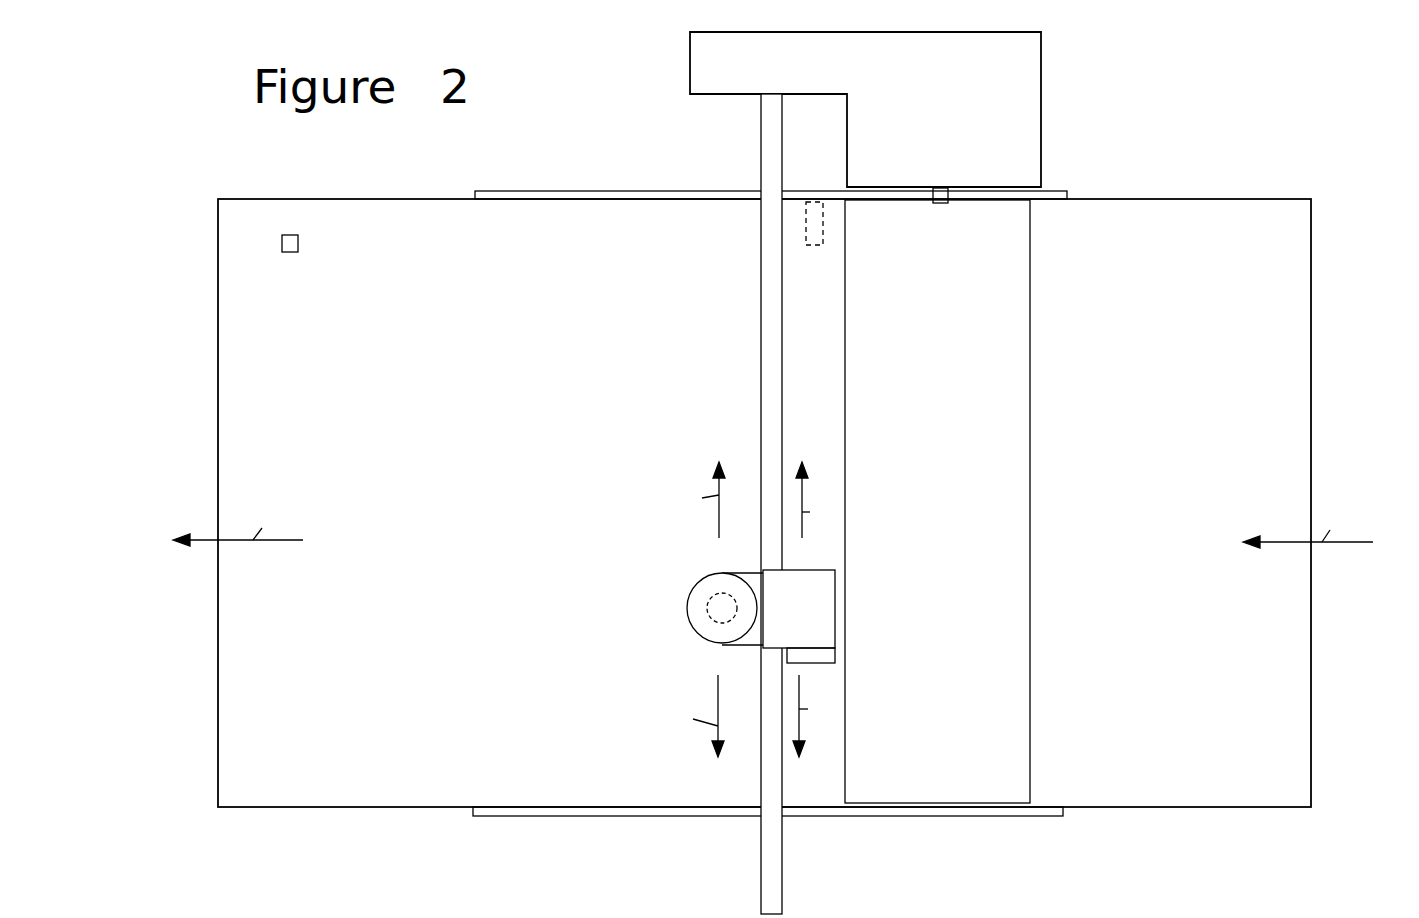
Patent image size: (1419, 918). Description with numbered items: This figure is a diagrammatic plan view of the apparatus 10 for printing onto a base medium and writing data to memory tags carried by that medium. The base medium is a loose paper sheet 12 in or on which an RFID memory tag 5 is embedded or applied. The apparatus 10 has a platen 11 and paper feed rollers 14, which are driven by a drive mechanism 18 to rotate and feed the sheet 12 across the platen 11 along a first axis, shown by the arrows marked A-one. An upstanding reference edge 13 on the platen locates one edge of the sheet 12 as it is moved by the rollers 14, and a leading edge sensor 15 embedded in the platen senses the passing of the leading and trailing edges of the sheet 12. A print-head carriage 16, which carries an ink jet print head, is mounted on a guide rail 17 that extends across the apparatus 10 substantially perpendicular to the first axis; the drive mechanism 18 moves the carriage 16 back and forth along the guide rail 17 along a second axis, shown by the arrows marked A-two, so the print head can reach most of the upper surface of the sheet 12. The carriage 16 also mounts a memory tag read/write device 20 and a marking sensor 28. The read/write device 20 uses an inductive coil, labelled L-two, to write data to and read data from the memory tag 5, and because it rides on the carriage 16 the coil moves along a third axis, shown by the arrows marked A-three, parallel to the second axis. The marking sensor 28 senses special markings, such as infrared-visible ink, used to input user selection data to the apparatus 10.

The apparatus 10 is at (1165, 132).
The sheet 12 is at (1311, 313).
The reference edge 13 is at (600, 192).
The platen 11 is at (565, 810).
The paper feed rollers 14 is at (1002, 778).
The drive mechanism 18 is at (953, 112).
The guide rail 17 is at (758, 833).
The leading edge sensor 15 is at (812, 223).
The memory tag read/write device 20 is at (690, 592).
The print-head carriage 16 is at (812, 619).
The marking sensor 28 is at (830, 657).
The memory tag 5 is at (298, 241).